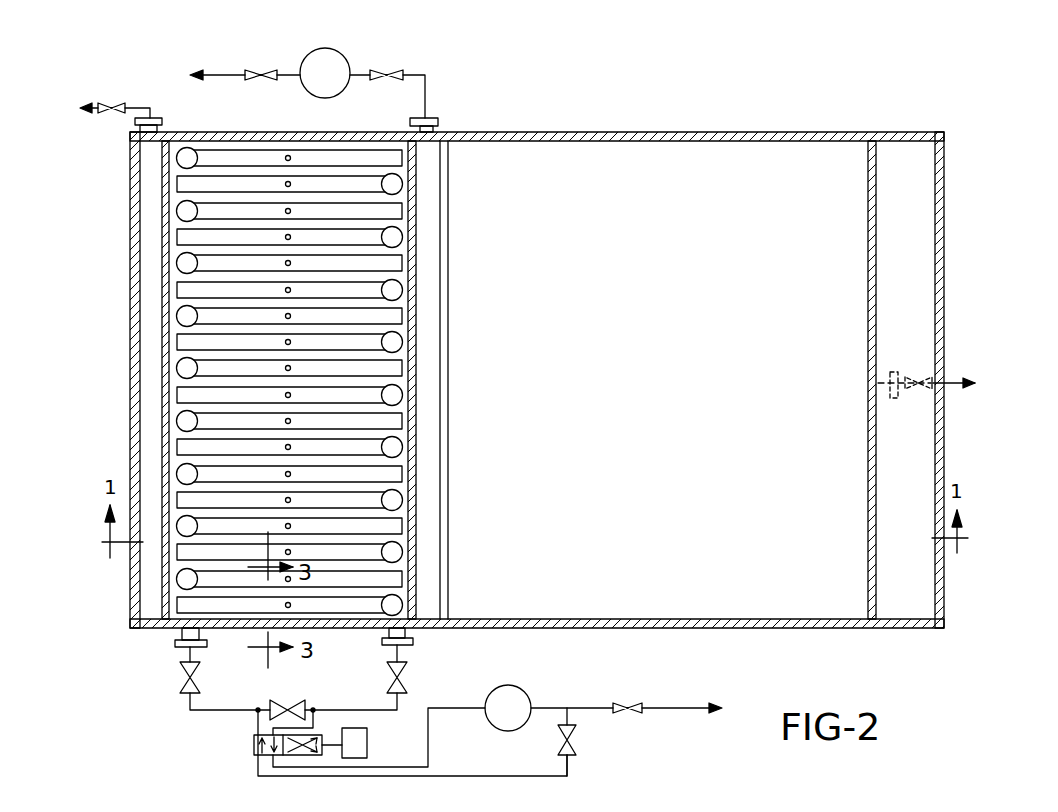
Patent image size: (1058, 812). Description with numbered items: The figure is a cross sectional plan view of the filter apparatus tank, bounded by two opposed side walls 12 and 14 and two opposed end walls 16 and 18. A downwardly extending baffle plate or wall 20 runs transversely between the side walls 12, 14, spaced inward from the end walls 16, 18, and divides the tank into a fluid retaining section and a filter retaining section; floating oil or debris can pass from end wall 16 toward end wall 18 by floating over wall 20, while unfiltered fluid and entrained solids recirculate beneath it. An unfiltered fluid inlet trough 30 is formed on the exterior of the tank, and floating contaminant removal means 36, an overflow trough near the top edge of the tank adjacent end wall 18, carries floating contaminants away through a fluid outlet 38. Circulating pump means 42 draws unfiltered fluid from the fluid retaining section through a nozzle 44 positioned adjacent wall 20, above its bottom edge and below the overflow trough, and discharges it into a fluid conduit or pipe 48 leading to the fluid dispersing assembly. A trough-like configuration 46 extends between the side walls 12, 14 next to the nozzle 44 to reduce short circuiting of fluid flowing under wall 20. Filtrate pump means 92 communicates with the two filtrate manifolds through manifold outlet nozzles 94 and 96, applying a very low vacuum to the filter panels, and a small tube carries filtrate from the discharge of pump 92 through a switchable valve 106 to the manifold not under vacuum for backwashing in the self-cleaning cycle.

The side wall 12 is at (611, 131).
The side wall 14 is at (705, 629).
The end wall 16 is at (868, 290).
The end wall 18 is at (162, 393).
The baffle plate or wall 20 is at (416, 410).
The unfiltered fluid inlet trough 30 is at (934, 225).
The floating contaminant removal means 36 is at (130, 313).
The fluid outlet 38 is at (163, 118).
The circulating pump means 42 is at (350, 34).
The nozzle 44 is at (438, 117).
The trough-like configuration 46 is at (452, 331).
The fluid conduit or pipe 48 is at (228, 58).
The filtrate pump means 92 is at (527, 682).
The manifold outlet nozzle 94 is at (178, 640).
The manifold outlet nozzle 96 is at (413, 643).
The switchable valve 106 is at (252, 740).